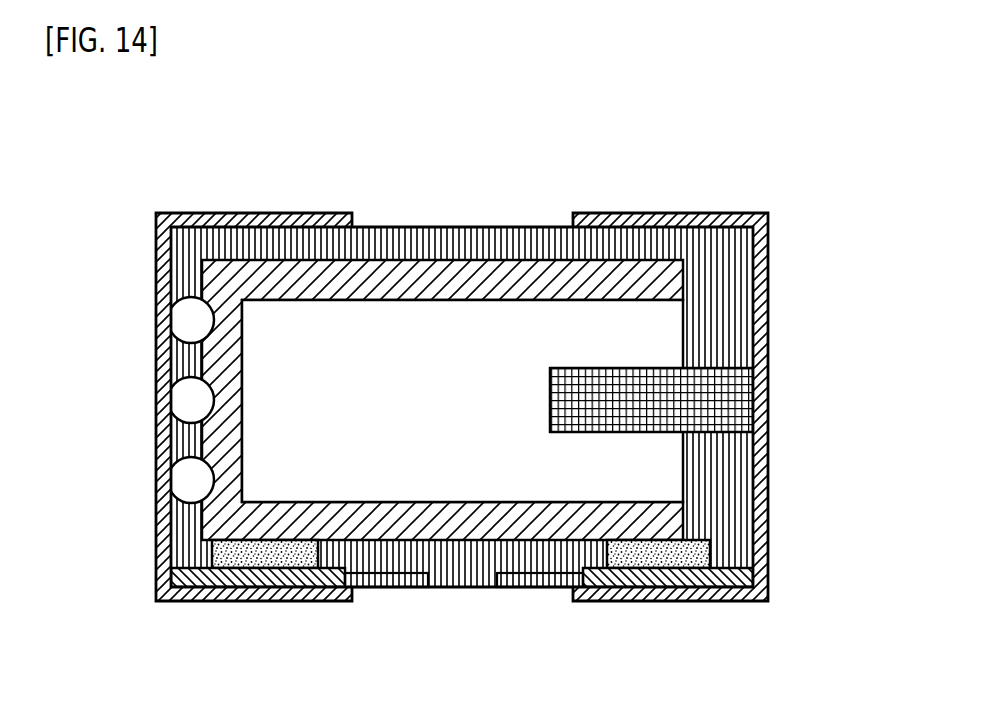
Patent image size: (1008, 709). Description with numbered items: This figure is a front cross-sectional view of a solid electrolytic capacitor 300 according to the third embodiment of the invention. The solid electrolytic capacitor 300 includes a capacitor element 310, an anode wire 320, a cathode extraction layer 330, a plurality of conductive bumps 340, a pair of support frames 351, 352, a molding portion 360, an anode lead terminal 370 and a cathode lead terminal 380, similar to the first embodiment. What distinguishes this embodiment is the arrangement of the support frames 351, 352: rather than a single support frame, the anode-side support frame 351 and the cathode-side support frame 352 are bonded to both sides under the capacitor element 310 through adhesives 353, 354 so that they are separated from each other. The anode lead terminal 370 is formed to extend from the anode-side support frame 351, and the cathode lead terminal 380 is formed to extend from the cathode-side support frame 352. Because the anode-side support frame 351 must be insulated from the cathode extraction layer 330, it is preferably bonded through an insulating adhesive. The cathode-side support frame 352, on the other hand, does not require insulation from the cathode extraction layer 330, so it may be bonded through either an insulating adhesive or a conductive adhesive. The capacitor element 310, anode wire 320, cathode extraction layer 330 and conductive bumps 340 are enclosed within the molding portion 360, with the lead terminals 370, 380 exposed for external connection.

The solid electrolytic capacitor 300 is at (730, 182).
The capacitor element 310 is at (409, 320).
The anode wire 320 is at (748, 397).
The cathode extraction layer 330 is at (513, 270).
The conductive bumps 340 is at (187, 317).
The anode-side support frame 351 is at (586, 582).
The cathode-side support frame 352 is at (340, 580).
The adhesive 353 is at (697, 553).
The adhesive 354 is at (225, 555).
The molding portion 360 is at (742, 497).
The anode lead terminal 370 is at (676, 580).
The cathode lead terminal 380 is at (231, 590).